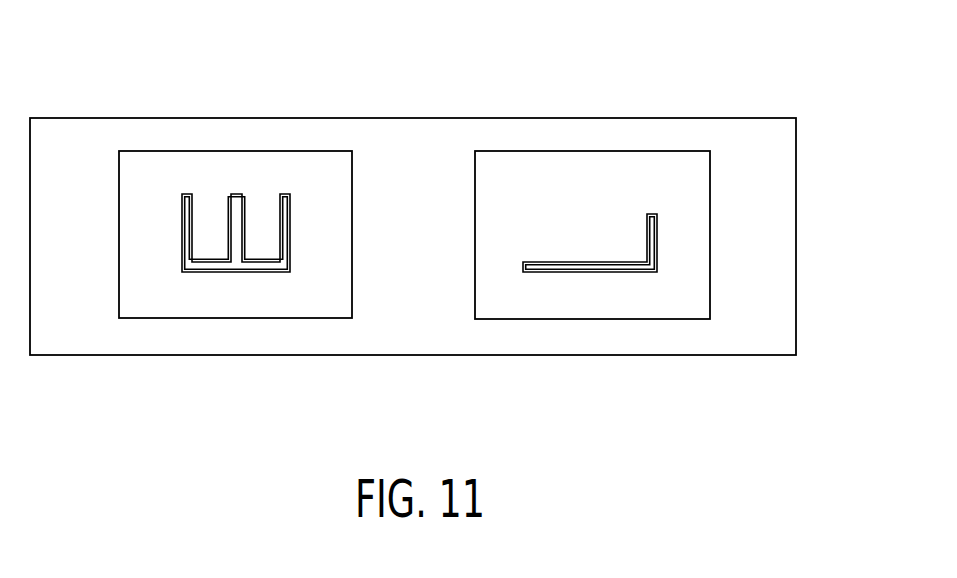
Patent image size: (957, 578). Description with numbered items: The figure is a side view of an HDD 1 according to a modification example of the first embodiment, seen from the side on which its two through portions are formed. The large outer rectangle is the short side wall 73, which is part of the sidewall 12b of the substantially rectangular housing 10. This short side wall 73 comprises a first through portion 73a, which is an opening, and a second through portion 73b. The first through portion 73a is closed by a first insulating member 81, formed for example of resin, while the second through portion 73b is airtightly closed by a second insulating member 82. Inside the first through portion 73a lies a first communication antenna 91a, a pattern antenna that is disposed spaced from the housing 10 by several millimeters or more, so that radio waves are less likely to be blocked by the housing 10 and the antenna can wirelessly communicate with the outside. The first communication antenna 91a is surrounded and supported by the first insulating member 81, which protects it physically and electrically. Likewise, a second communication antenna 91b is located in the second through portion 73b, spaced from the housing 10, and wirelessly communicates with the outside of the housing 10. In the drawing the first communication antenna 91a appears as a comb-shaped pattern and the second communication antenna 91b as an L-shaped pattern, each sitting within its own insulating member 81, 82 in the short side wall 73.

The HDD 1 is at (461, 226).
The housing 10 is at (803, 172).
The sidewall 12b is at (413, 271).
The short side wall 73 is at (422, 280).
The first through portion 73a is at (154, 154).
The second through portion 73b is at (511, 154).
The first insulating member 81 is at (318, 162).
The second insulating member 82 is at (675, 162).
The first communication antenna 91a is at (291, 257).
The second communication antenna 91b is at (658, 259).